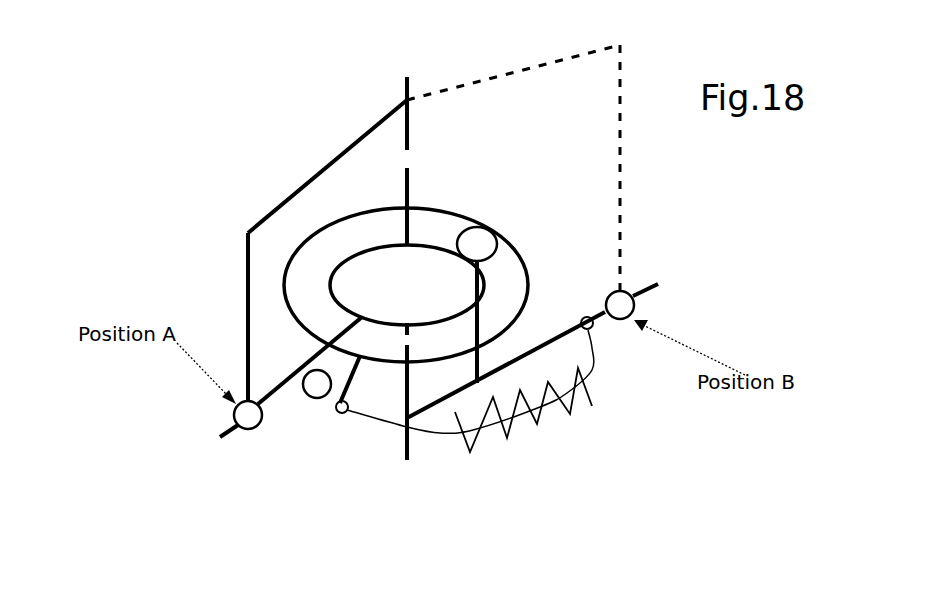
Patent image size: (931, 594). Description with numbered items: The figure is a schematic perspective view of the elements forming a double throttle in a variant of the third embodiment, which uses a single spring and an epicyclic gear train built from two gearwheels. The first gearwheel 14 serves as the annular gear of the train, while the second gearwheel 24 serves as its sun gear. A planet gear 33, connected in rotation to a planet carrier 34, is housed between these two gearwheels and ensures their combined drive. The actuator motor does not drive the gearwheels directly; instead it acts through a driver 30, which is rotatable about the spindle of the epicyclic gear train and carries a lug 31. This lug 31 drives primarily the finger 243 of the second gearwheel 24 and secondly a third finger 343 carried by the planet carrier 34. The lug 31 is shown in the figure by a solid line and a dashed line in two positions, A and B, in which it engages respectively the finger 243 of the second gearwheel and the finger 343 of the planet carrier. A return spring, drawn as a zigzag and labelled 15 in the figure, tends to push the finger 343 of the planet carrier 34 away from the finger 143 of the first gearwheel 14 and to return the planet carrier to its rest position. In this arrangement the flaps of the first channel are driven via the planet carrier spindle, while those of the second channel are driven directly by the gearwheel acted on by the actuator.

The first gearwheel 14 is at (512, 233).
The second gearwheel 24 is at (330, 275).
The planet carrier 34 is at (484, 320).
The planet gear 33 is at (470, 227).
The driver 30 is at (318, 174).
The lug 31 is at (248, 430).
The finger of the second gearwheel 243 is at (282, 378).
The finger of the first gearwheel 143 is at (348, 382).
The third finger 343 is at (645, 292).
The spring 15 is at (530, 425).